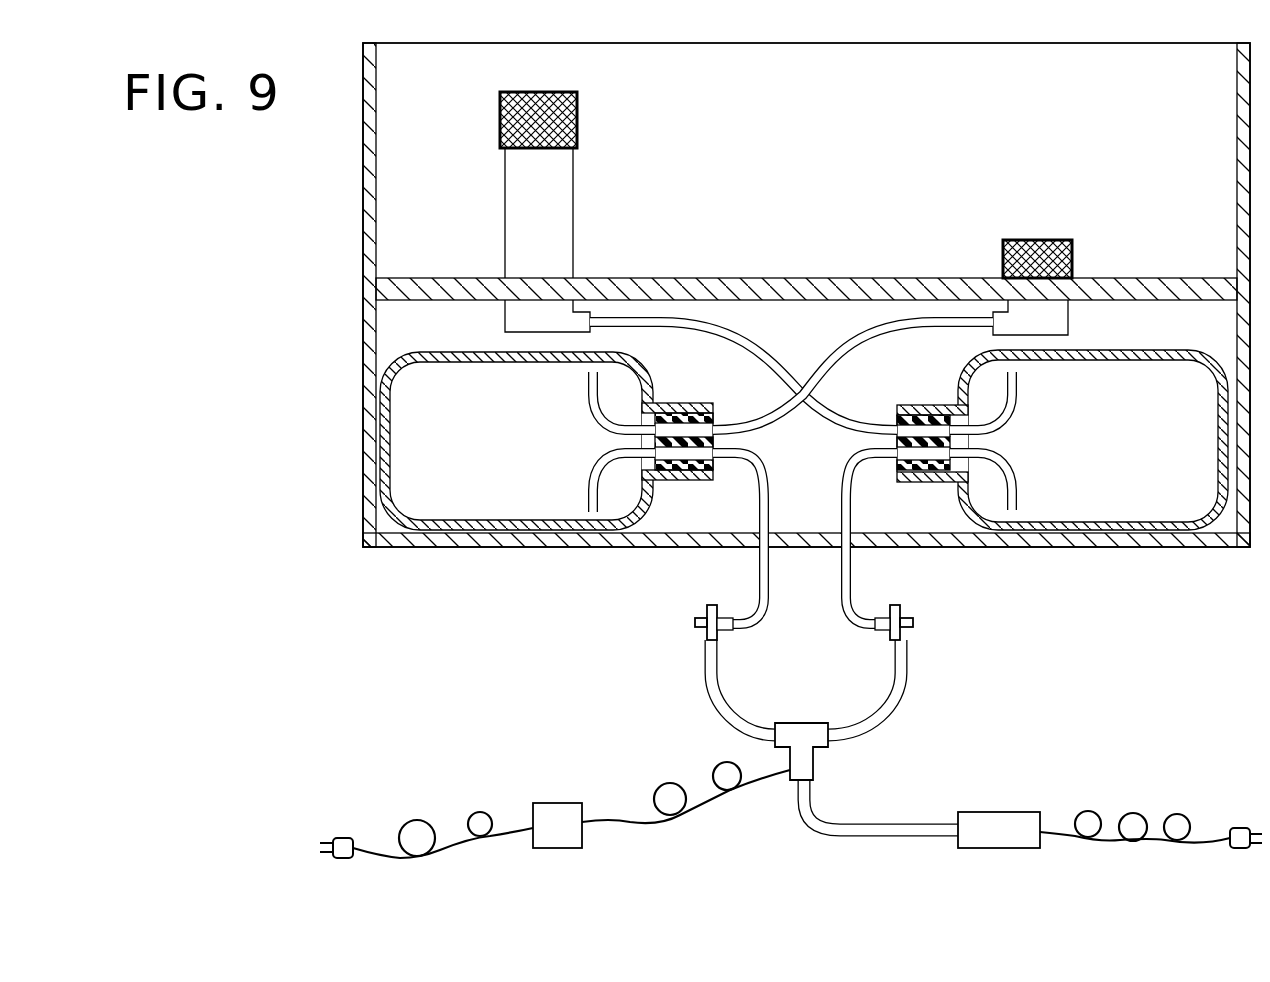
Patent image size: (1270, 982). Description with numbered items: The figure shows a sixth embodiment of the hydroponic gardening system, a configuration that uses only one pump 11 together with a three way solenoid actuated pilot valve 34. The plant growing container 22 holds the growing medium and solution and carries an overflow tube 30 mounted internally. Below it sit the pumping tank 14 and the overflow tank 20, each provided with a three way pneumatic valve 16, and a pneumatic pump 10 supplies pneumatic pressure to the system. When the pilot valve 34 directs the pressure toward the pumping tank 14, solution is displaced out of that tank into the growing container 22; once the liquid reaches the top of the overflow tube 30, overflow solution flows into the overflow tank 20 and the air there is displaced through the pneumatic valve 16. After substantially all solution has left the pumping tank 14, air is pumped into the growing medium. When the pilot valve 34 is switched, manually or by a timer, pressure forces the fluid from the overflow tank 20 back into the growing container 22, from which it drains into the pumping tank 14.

The plant growing container 22 is at (370, 178).
The overflow tube 30 is at (562, 185).
The pumping tank 14 is at (492, 462).
The overflow tank 20 is at (1112, 458).
The three way pneumatic valve 16 is at (707, 610).
The three way solenoid actuated pilot valve 34 is at (806, 757).
The pump 11 is at (562, 810).
The pneumatic pump 10 is at (1010, 820).